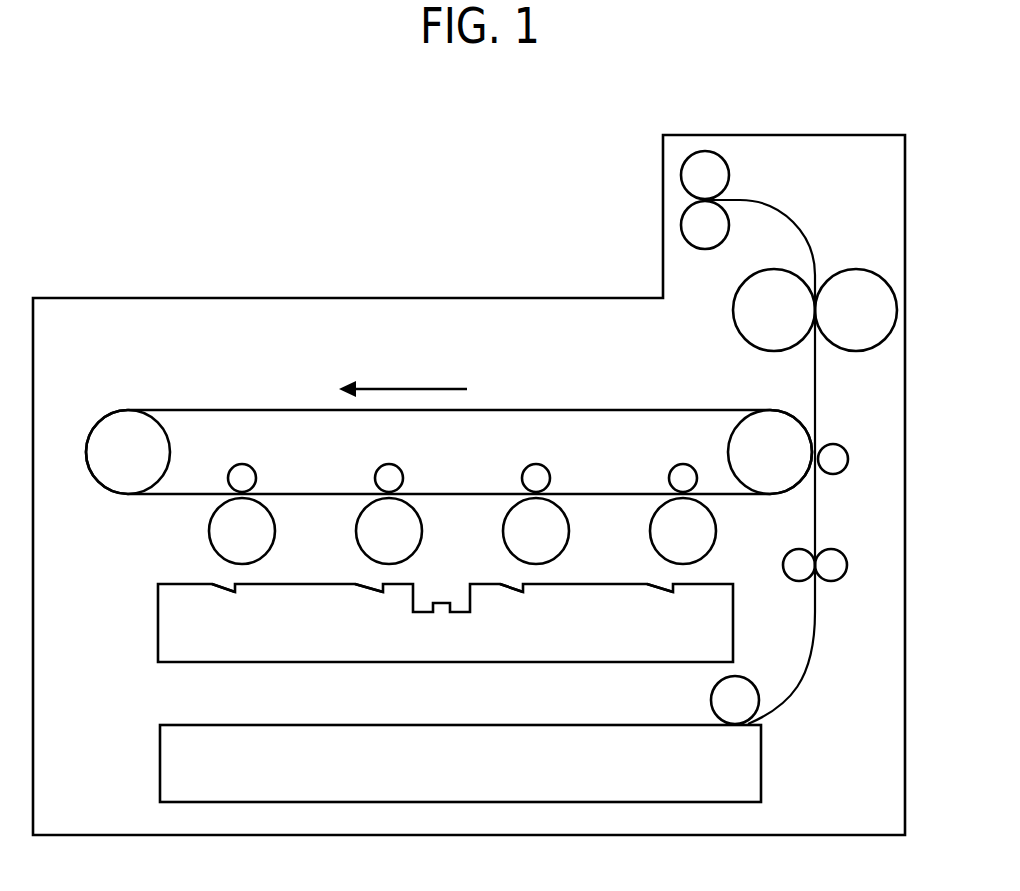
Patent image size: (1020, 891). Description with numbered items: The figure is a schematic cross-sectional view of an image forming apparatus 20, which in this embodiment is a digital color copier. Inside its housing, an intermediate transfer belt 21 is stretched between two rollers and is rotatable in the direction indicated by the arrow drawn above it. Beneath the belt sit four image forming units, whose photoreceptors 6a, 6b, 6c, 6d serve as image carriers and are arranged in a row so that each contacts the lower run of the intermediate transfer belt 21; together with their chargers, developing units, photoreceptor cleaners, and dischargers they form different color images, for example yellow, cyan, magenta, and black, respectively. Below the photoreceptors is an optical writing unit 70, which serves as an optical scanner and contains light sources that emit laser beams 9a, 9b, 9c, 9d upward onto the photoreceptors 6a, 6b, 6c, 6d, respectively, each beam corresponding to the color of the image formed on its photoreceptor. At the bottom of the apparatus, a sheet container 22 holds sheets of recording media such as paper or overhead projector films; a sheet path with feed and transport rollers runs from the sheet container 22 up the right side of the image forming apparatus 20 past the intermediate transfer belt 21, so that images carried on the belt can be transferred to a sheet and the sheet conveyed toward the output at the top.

The image forming apparatus 20 is at (822, 111).
The intermediate transfer belt 21 is at (233, 411).
The sheet container 22 is at (160, 752).
The photoreceptor 6a is at (708, 540).
The photoreceptor 6b is at (561, 540).
The photoreceptor 6c is at (414, 540).
The photoreceptor 6d is at (267, 540).
The laser beam 9a is at (675, 566).
The laser beam 9b is at (528, 566).
The laser beam 9c is at (381, 566).
The laser beam 9d is at (234, 566).
The optical writing unit 70 is at (146, 590).